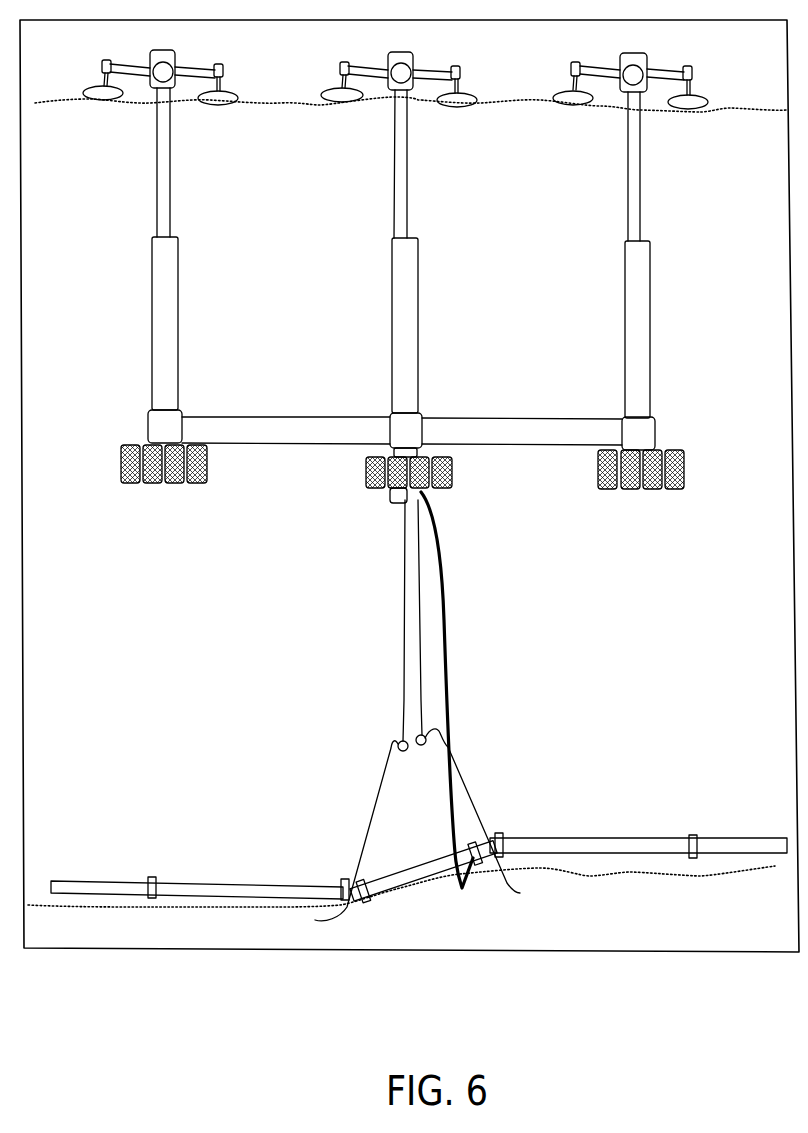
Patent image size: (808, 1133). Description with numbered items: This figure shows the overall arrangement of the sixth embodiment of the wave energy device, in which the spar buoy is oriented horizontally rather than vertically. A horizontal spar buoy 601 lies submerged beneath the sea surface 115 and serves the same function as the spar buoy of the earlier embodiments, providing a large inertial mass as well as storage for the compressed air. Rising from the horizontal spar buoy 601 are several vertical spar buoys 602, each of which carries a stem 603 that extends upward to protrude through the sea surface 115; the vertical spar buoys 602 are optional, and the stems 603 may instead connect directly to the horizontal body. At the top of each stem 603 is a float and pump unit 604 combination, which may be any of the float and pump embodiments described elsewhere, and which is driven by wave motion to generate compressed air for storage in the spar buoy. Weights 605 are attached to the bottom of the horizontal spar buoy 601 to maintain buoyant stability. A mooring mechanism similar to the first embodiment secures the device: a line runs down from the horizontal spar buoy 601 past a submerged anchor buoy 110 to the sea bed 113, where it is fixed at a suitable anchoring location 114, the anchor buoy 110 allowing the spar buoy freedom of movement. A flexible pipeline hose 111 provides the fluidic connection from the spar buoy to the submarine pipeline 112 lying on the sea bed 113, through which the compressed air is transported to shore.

The submerged anchor buoy 110 is at (358, 848).
The pipeline hose 111 is at (450, 696).
The submarine pipeline 112 is at (597, 838).
The sea bed 113 is at (401, 888).
The anchoring location 114 is at (439, 877).
The sea surface 115 is at (411, 113).
The horizontal spar buoy 601 is at (474, 440).
The vertical spar buoy 602 is at (625, 322).
The stem 603 is at (628, 168).
The float and pump unit 604 is at (630, 70).
The weights 605 is at (618, 490).